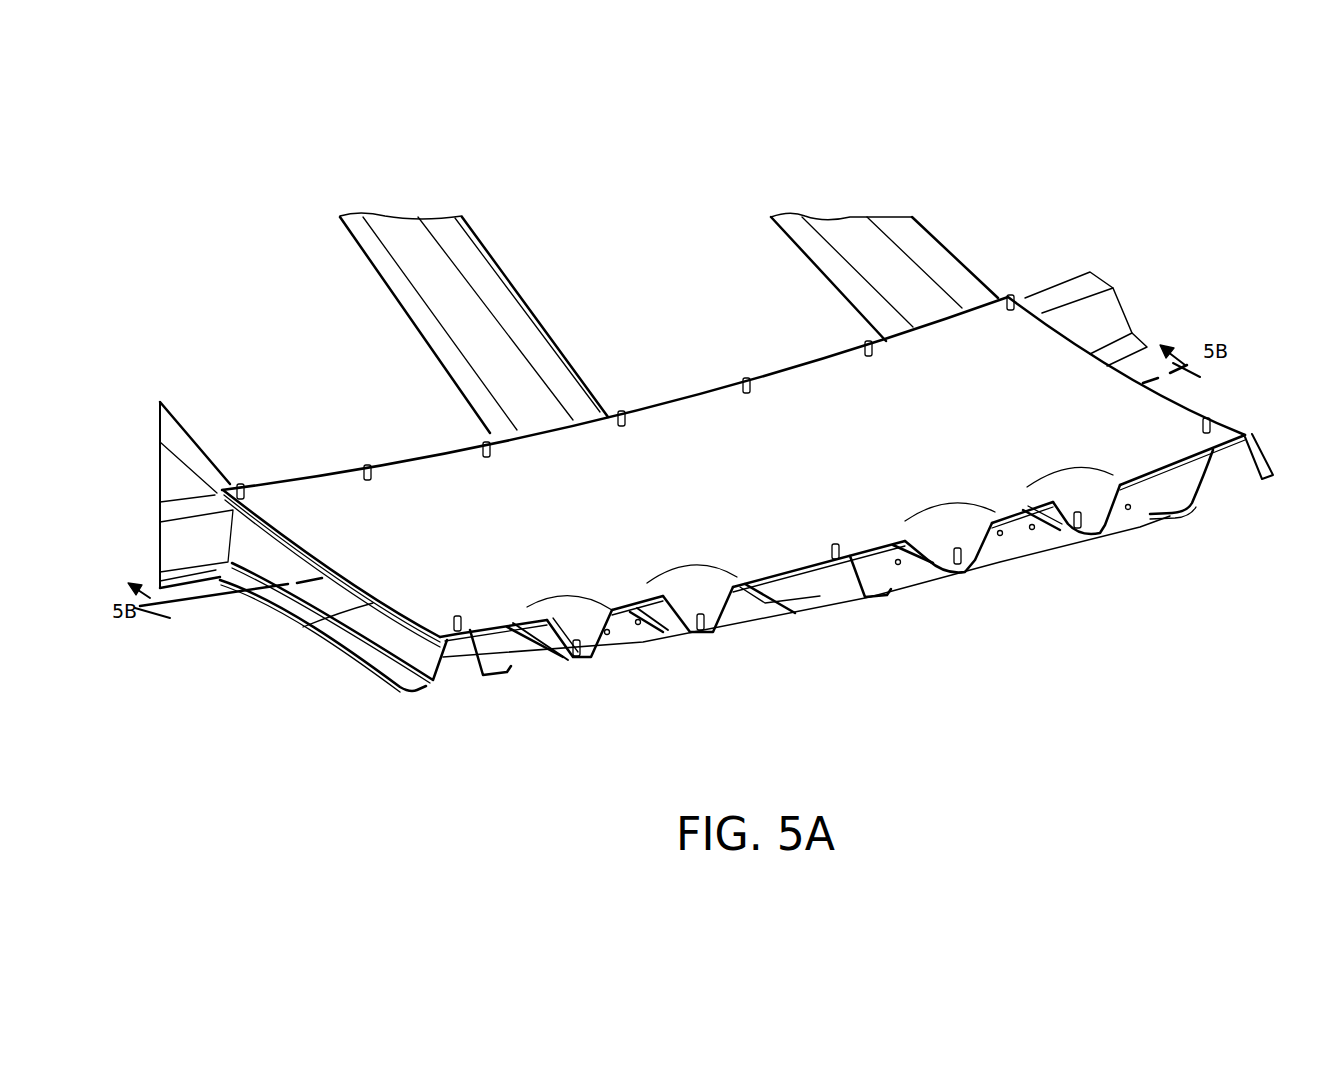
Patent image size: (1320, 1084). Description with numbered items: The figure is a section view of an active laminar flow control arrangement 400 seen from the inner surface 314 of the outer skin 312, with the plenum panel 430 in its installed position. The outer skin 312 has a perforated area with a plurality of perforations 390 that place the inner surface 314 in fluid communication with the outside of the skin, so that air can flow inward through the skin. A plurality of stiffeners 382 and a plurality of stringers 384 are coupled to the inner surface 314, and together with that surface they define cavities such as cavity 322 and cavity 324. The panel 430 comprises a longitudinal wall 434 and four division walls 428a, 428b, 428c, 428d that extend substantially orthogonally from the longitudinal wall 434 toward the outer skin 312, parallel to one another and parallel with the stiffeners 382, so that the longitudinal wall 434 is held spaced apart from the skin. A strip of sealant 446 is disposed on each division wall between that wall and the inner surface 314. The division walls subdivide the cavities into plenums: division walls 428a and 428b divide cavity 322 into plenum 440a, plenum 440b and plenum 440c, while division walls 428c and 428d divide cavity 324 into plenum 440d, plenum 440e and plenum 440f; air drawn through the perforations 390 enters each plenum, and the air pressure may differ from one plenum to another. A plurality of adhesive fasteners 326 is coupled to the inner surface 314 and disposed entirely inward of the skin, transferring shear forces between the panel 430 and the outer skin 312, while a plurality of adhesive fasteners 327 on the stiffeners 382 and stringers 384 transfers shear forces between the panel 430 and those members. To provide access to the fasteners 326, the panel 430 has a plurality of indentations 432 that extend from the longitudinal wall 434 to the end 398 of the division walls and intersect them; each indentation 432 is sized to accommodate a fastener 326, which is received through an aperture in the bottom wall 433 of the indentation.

The active laminar flow control arrangement 400 is at (642, 244).
The stiffeners 382 is at (203, 458).
The stringers 384 is at (1088, 287).
The adhesive fasteners 327 is at (250, 484).
The plenum panel 430 is at (683, 430).
The longitudinal wall 434 is at (377, 602).
The division wall 428a is at (537, 628).
The division wall 428b is at (660, 585).
The division wall 428c is at (922, 556).
The division wall 428d is at (1041, 515).
The indentations 432 is at (562, 598).
The adhesive fasteners 326 is at (578, 637).
The bottom wall 433 is at (590, 623).
The strip of sealant 446 is at (584, 674).
The plenum 440a is at (510, 656).
The plenum 440b is at (633, 633).
The plenum 440c is at (752, 630).
The plenum 440d is at (918, 585).
The plenum 440e is at (1028, 550).
The plenum 440f is at (1149, 518).
The cavity 322 is at (638, 676).
The end of division walls 398 is at (577, 677).
The outer skin 312 is at (893, 598).
The inner surface 314 is at (832, 596).
The cavity 324 is at (1085, 580).
The perforations 390 is at (1000, 537).